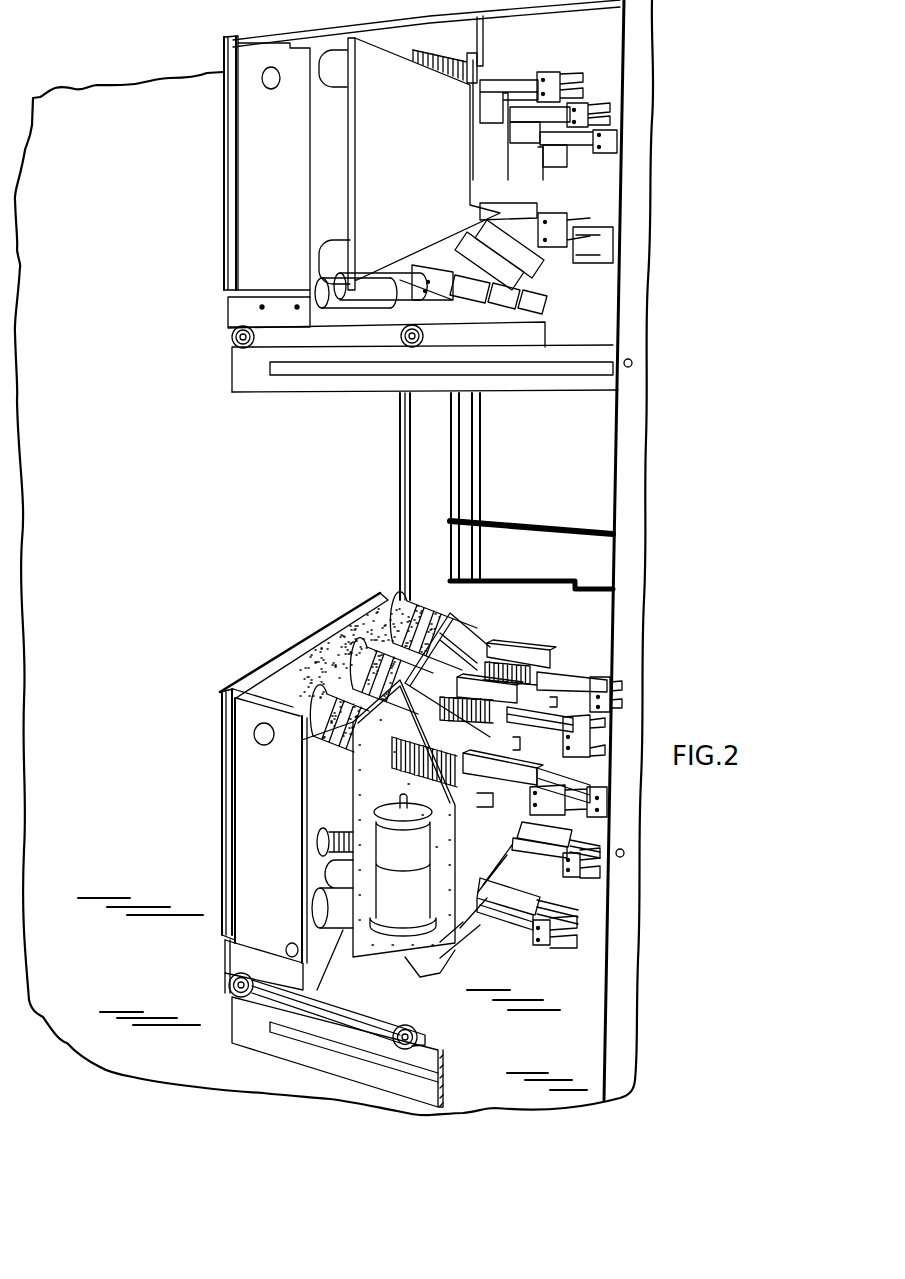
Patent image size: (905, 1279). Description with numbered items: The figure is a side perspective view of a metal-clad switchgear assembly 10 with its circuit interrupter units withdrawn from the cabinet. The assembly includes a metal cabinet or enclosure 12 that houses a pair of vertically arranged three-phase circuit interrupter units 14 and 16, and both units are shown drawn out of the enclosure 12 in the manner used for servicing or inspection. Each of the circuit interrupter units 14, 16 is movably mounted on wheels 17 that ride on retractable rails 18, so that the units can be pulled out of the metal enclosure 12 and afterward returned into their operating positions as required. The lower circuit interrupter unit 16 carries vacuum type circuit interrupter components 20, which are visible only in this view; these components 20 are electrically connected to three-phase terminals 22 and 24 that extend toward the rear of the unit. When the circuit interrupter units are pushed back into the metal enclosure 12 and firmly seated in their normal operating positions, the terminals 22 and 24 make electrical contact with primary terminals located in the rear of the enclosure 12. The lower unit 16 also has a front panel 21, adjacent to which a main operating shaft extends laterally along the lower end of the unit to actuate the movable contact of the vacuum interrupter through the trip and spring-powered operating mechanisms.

The metal-clad switchgear assembly 10 is at (268, 540).
The metal cabinet or enclosure 12 is at (636, 467).
The circuit interrupter unit 14 is at (229, 158).
The circuit interrupter unit 16 is at (222, 788).
The wheels 17 is at (243, 349).
The retractable rails 18 is at (375, 385).
The vacuum type circuit interrupter component 20 is at (420, 882).
The front panel 21 is at (226, 848).
The three-phase terminals 22 is at (548, 72).
The three-phase terminals 24 is at (573, 253).